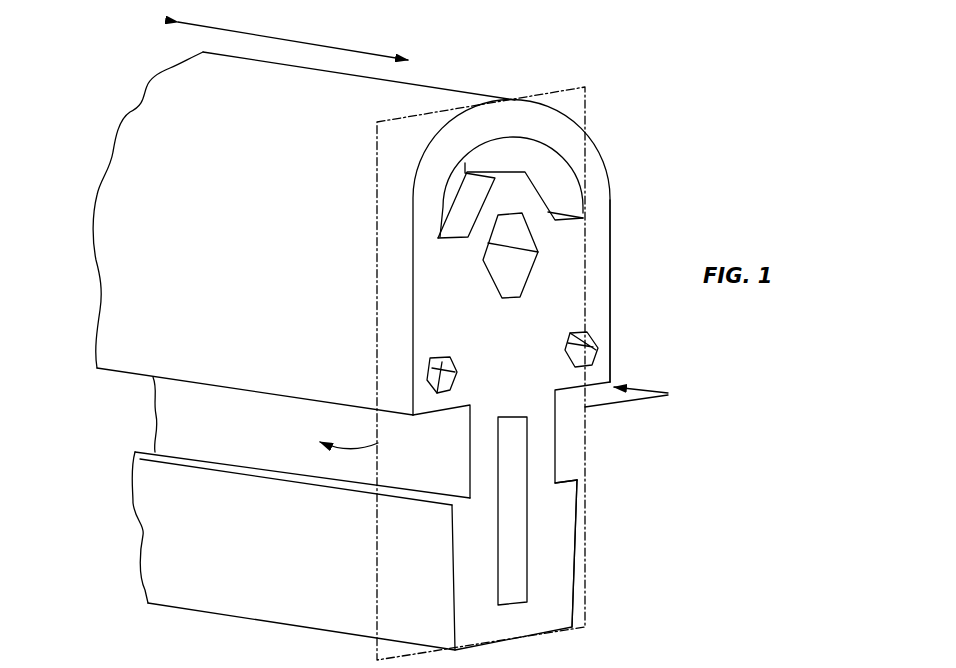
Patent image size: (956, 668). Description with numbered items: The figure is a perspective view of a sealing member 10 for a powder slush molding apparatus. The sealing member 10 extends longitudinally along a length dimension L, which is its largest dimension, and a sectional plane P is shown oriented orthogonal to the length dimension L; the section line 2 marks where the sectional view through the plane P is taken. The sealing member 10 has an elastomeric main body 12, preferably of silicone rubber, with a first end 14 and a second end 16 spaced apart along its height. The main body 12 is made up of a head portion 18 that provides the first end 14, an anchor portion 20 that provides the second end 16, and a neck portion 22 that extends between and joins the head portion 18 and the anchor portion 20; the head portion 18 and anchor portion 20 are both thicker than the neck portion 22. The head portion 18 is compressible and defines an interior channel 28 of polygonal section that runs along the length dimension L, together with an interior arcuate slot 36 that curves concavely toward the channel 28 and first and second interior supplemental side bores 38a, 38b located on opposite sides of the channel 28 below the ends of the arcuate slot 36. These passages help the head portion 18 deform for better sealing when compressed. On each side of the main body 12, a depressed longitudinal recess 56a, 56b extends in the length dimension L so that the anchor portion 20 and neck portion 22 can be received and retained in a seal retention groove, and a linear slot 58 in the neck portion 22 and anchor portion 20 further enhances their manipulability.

The sealing member 10 is at (78, 308).
The elastomeric main body 12 is at (583, 245).
The first end 14 is at (520, 100).
The second end 16 is at (518, 641).
The head portion 18 is at (612, 265).
The anchor portion 20 is at (580, 520).
The neck portion 22 is at (559, 441).
The interior channel 28 is at (524, 264).
The interior arcuate slot 36 is at (565, 170).
The first interior supplemental side bore 38a is at (442, 362).
The second interior supplemental side bore 38b is at (590, 347).
The depressed longitudinal recess 56a is at (469, 467).
The depressed longitudinal recess 56b is at (558, 473).
The linear slot 58 is at (503, 562).
The length dimension L is at (312, 42).
The sectional plane P is at (586, 101).
The section line 2- 2 is at (502, 427).